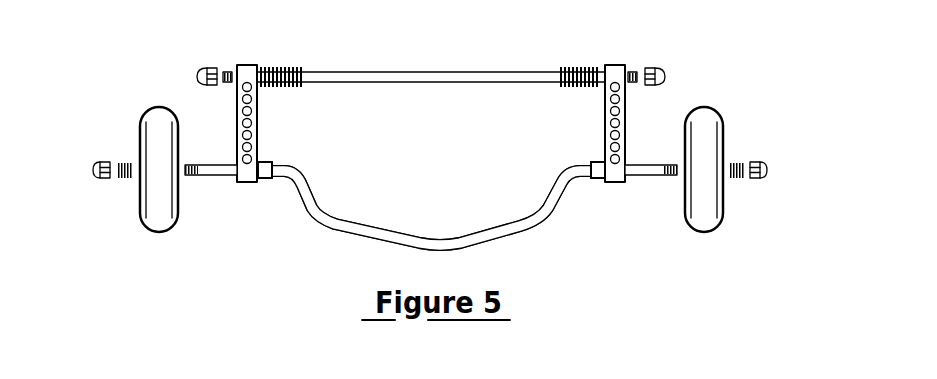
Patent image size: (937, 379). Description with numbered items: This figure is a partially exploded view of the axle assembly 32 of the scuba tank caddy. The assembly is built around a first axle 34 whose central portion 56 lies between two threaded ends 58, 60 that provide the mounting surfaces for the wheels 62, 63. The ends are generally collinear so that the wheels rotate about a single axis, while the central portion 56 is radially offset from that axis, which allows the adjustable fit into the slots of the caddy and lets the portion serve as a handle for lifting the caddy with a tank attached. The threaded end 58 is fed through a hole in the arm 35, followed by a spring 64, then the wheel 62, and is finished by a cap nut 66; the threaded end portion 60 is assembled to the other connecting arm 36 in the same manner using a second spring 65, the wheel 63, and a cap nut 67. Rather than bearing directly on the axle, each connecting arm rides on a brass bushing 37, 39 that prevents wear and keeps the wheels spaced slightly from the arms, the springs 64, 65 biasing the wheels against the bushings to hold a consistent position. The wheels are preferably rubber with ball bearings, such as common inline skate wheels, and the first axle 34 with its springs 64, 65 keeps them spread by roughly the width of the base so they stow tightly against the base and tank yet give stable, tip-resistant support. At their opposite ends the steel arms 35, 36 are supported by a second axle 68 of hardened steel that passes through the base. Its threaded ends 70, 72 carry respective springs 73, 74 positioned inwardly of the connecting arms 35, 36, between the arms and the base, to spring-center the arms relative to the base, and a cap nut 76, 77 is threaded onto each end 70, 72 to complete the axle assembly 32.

The axle assembly 32 is at (745, 290).
The axle 34 is at (530, 237).
The arm 35 is at (625, 118).
The connecting arm 36 is at (257, 118).
The brass bushing 37 is at (630, 183).
The brass bushing 39 is at (237, 183).
The central portion 56 is at (428, 243).
The threaded end 58 is at (670, 178).
The threaded end portion 60 is at (188, 178).
The wheel 62 is at (703, 218).
The wheel 63 is at (160, 216).
The spring 64 is at (737, 179).
The second spring 65 is at (125, 180).
The cap nut 66 is at (768, 170).
The cap nut 67 is at (107, 161).
The second axle 68 is at (402, 72).
The threaded end 70 is at (633, 70).
The threaded end 72 is at (231, 70).
The spring 73 is at (590, 68).
The spring 74 is at (278, 68).
The cap nut 76 is at (665, 78).
The cap nut 77 is at (197, 77).